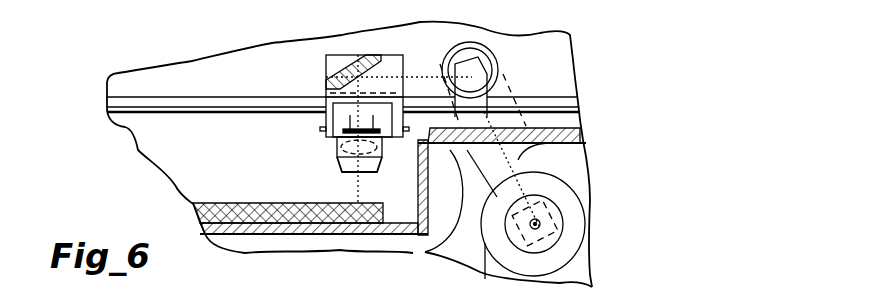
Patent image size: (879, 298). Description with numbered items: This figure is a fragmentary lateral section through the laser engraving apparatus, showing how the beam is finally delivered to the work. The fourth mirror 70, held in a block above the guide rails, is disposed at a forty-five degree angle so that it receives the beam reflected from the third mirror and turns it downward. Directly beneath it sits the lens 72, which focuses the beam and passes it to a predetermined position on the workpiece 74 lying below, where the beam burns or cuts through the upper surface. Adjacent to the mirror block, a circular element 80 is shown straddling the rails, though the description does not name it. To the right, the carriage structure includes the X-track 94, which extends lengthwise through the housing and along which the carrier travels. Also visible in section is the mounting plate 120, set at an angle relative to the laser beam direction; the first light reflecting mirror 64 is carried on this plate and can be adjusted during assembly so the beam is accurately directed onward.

The first light reflecting mirror 64 is at (545, 226).
The fourth mirror 70 is at (352, 57).
The lens 72 is at (336, 148).
The workpiece 74 is at (252, 218).
The roller 80 is at (478, 57).
The X-track 94 is at (425, 252).
The mounting plate 120 is at (578, 128).